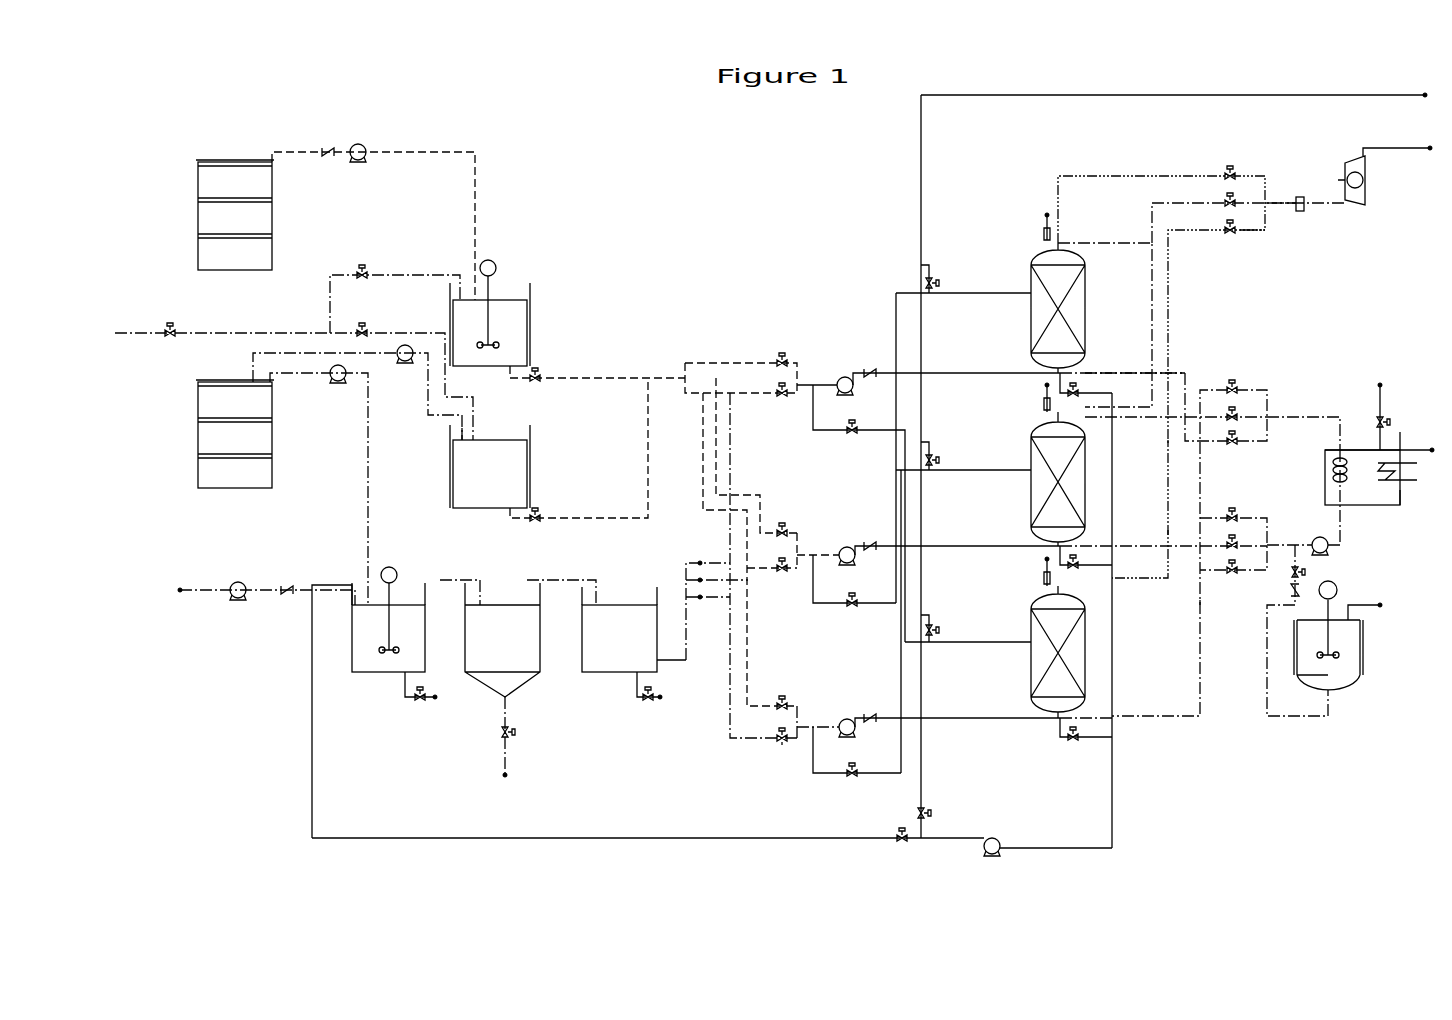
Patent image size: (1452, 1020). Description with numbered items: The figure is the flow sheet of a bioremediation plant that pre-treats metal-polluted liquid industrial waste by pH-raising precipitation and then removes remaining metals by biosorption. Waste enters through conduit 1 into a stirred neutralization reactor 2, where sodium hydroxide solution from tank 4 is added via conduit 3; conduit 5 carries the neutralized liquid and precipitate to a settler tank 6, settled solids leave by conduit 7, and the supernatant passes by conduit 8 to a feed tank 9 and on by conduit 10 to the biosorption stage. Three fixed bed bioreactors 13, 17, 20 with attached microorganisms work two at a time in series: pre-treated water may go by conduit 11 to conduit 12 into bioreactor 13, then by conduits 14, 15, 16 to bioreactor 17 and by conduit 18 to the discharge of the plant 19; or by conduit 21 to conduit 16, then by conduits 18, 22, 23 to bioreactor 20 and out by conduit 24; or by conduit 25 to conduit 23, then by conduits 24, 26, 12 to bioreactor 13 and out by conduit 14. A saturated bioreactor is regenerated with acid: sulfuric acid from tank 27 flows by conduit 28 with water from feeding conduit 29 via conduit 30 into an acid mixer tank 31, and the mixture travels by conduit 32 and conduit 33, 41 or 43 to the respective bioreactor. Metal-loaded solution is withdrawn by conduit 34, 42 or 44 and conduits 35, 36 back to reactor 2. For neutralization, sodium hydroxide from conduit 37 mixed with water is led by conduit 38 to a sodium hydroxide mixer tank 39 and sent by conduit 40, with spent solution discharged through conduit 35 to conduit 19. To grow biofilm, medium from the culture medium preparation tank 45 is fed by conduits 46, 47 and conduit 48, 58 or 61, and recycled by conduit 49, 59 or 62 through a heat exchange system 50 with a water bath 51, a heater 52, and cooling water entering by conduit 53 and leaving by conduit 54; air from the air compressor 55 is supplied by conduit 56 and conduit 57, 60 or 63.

The conduit 1 is at (190, 593).
The neutralization reactor 2 is at (352, 652).
The conduit 3 is at (368, 500).
The tank 4 is at (272, 445).
The conduit 5 is at (445, 580).
The settler tank 6 is at (485, 683).
The conduit 7 is at (505, 750).
The conduit 8 is at (565, 580).
The feed tank 9 is at (600, 672).
The conduit 10 is at (686, 645).
The conduit 11 is at (768, 393).
The conduit 12 is at (1020, 373).
The fixed bed bioreactor 13 is at (1031, 318).
The conduit 14 is at (995, 293).
The conduit 15 is at (813, 603).
The conduit 16 is at (1020, 546).
The fixed bed bioreactor 17 is at (1031, 490).
The conduit 18 is at (995, 470).
The discharge of the plant 19 is at (1380, 95).
The fixed bed bioreactor 20 is at (1031, 660).
The conduit 21 is at (770, 568).
The conduit 22 is at (813, 773).
The conduit 23 is at (1020, 718).
The conduit 24 is at (995, 642).
The conduit 25 is at (770, 738).
The conduit 26 is at (813, 430).
The tank 27 is at (272, 218).
The conduit 28 is at (430, 152).
The feeding conduit 29 is at (128, 337).
The conduit 30 is at (410, 269).
The acid mixer tank 31 is at (527, 325).
The conduit 32 is at (648, 378).
The conduit 33 is at (735, 363).
The conduit 34 is at (1095, 393).
The conduit 35 is at (1112, 760).
The conduit 36 is at (633, 838).
The conduit 37 is at (425, 380).
The conduit 38 is at (478, 410).
The sodium hydroxide mixer tank 39 is at (527, 470).
The conduit 40 is at (598, 518).
The conduit 41 is at (770, 533).
The conduit 42 is at (1095, 565).
The conduit 43 is at (703, 510).
The conduit 44 is at (1090, 745).
The culture medium preparation tank 45 is at (1297, 660).
The conduit 46 is at (1290, 716).
The conduit 47 is at (1300, 417).
The conduit 48 is at (1185, 320).
The conduit 49 is at (1108, 407).
The heat exchange system 50 is at (1325, 495).
The water bath 51 is at (1375, 498).
The heater 52 is at (1408, 490).
The conduit 53 is at (1385, 405).
The conduit 54 is at (1405, 450).
The air compressor 55 is at (1365, 195).
The conduit 56 is at (1275, 203).
The conduit 57 is at (1105, 176).
The conduit 58 is at (1158, 400).
The conduit 59 is at (1154, 550).
The conduit 60 is at (1152, 243).
The conduit 61 is at (1145, 582).
The conduit 62 is at (1150, 705).
The conduit 63 is at (1243, 235).